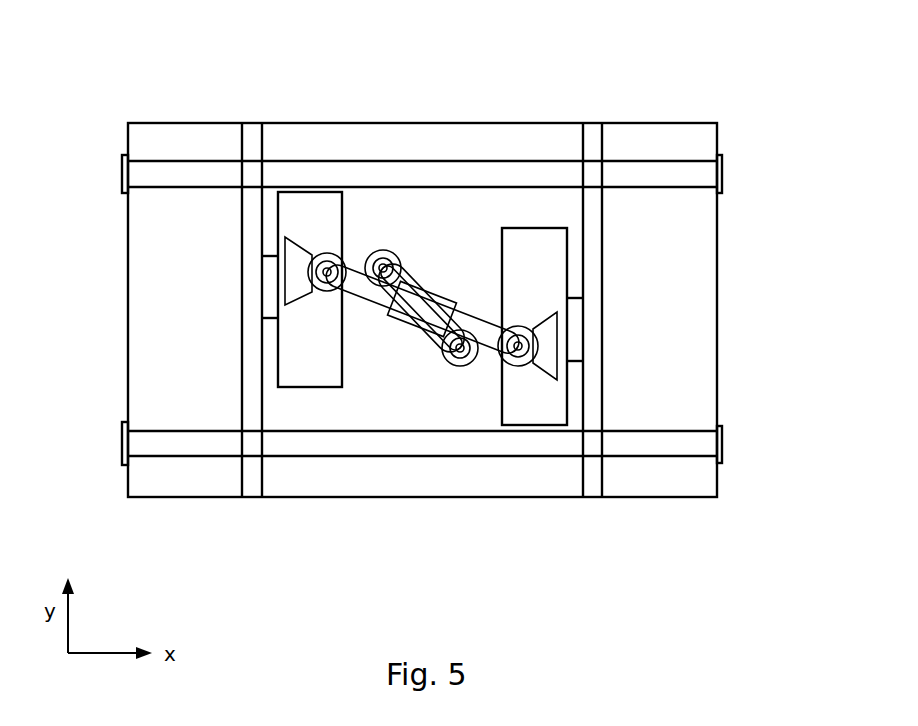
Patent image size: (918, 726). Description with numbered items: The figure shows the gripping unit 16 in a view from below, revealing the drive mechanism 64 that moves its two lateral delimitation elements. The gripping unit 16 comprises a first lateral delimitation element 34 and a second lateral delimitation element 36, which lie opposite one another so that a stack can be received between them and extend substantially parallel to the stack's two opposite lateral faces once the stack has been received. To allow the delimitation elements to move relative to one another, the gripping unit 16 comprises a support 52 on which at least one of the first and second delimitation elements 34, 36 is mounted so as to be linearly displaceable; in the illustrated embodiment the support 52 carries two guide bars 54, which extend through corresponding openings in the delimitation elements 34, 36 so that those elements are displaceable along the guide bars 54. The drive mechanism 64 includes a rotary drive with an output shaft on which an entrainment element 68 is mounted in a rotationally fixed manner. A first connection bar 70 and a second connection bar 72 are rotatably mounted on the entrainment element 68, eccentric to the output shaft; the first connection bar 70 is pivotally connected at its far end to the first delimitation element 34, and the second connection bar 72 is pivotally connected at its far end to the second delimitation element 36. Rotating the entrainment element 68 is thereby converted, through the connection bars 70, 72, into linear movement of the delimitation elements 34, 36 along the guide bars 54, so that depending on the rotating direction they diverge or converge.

The gripping unit 16 is at (440, 310).
The first lateral delimitation element 34 is at (251, 270).
The second lateral delimitation element 36 is at (595, 218).
The support 52 is at (676, 283).
The guide bars 54 is at (178, 172).
The drive mechanism 64 is at (431, 318).
The entrainment element 68 is at (425, 312).
The first connection bar 70 is at (362, 297).
The second connection bar 72 is at (485, 328).